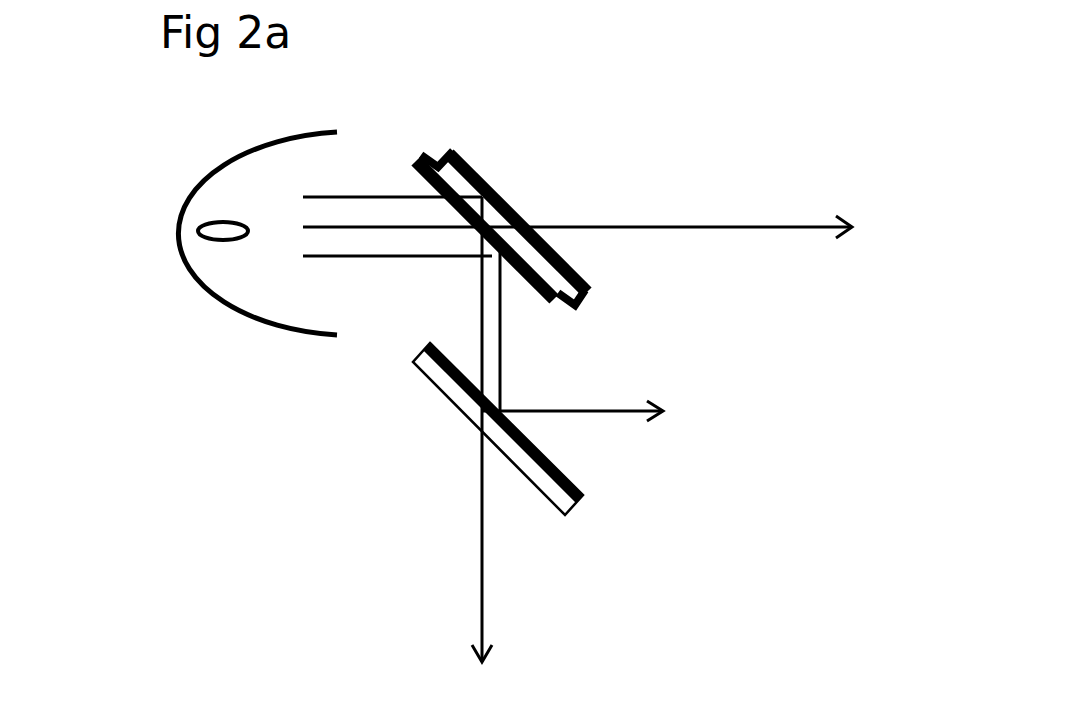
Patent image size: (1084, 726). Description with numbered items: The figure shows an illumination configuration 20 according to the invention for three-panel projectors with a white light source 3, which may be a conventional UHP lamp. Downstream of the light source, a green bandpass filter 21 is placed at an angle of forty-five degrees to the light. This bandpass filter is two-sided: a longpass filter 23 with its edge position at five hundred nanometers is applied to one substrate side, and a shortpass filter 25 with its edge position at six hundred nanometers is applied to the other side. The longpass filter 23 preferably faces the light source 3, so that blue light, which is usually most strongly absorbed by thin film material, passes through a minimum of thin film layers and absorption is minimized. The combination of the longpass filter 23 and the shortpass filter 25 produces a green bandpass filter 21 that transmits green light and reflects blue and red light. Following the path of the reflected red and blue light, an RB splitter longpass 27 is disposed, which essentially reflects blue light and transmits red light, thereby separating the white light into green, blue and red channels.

The white light source 3 is at (205, 303).
The illumination configuration 20 is at (871, 81).
The green bandpass filter 21 is at (507, 199).
The longpass filter 23 is at (413, 163).
The shortpass filter 25 is at (508, 210).
The RB splitter longpass 27 is at (445, 400).